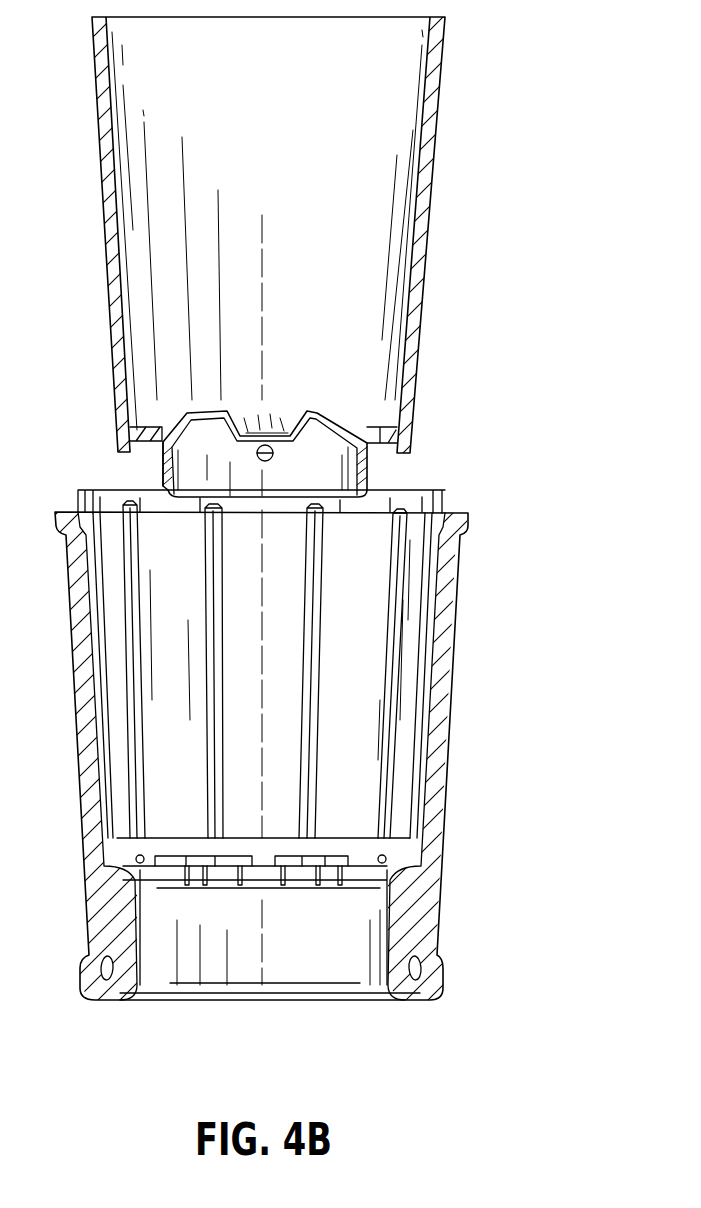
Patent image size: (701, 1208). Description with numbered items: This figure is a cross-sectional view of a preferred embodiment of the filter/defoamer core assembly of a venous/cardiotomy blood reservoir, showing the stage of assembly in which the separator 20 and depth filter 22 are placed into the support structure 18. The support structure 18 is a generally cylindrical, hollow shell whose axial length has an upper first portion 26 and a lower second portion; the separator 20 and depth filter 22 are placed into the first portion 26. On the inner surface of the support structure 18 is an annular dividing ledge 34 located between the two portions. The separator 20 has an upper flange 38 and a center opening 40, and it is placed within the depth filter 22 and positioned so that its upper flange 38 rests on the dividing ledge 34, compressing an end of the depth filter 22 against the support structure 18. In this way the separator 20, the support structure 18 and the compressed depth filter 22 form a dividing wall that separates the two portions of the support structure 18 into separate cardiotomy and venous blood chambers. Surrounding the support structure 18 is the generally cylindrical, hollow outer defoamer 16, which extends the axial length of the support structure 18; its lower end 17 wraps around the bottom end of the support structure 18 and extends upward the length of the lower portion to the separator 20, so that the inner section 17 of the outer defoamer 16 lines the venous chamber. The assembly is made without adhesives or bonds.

The outer defoamer 16 is at (350, 604).
The lower end of the outer defoamer 17 is at (133, 970).
The support structure 18 is at (410, 577).
The separator 20 is at (325, 394).
The depth filter 22 is at (420, 307).
The first portion of the support structure 26 is at (160, 466).
The annular dividing ledge 34 is at (140, 880).
The upper flange 38 is at (130, 435).
The center opening 40 is at (268, 420).